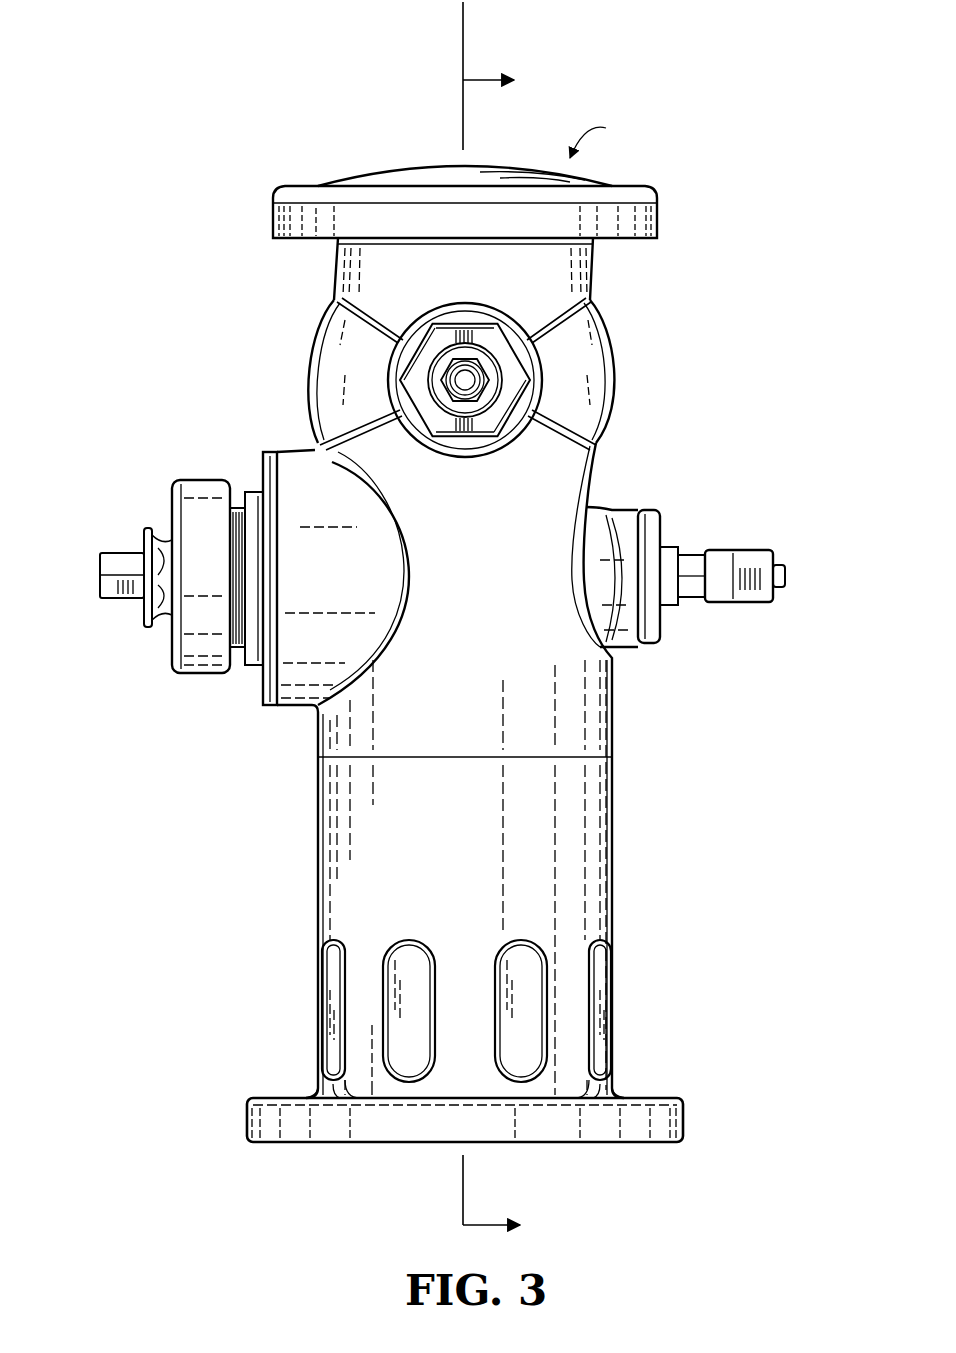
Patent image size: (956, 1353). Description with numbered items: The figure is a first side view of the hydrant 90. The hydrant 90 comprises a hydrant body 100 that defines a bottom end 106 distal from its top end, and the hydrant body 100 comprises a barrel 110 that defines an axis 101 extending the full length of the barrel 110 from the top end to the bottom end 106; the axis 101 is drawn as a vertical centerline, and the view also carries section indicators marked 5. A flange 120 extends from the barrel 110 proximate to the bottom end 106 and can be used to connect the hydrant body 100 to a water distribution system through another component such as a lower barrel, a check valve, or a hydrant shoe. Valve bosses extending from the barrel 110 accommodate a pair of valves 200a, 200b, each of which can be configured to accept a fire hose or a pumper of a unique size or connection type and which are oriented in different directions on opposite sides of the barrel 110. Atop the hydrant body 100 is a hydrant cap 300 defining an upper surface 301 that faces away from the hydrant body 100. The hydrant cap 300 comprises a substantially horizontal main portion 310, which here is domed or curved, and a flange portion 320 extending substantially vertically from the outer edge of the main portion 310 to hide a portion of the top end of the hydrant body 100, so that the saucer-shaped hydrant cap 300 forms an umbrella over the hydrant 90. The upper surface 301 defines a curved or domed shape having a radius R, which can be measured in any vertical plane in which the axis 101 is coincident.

The hydrant 90 is at (308, 46).
The axis 101 is at (463, 40).
The section line indicator 5 is at (505, 654).
The radius R is at (600, 138).
The hydrant cap 300 is at (650, 218).
The upper surface 301 is at (422, 178).
The main portion 310 is at (392, 182).
The flange portion 320 is at (275, 218).
The valve 200a is at (505, 375).
The valve 200b is at (753, 563).
The hydrant body 100 is at (590, 822).
The barrel 110 is at (575, 878).
The flange 120 is at (650, 1095).
The bottom end 106 is at (305, 1143).